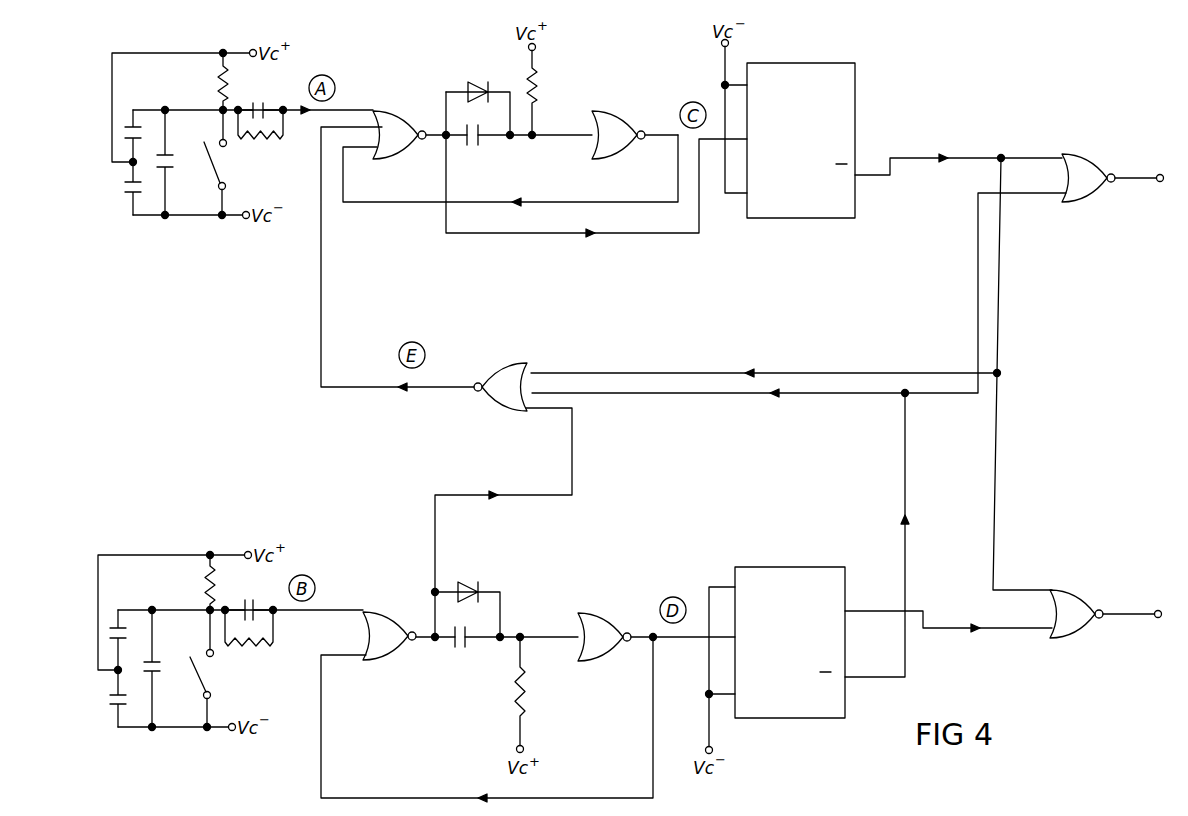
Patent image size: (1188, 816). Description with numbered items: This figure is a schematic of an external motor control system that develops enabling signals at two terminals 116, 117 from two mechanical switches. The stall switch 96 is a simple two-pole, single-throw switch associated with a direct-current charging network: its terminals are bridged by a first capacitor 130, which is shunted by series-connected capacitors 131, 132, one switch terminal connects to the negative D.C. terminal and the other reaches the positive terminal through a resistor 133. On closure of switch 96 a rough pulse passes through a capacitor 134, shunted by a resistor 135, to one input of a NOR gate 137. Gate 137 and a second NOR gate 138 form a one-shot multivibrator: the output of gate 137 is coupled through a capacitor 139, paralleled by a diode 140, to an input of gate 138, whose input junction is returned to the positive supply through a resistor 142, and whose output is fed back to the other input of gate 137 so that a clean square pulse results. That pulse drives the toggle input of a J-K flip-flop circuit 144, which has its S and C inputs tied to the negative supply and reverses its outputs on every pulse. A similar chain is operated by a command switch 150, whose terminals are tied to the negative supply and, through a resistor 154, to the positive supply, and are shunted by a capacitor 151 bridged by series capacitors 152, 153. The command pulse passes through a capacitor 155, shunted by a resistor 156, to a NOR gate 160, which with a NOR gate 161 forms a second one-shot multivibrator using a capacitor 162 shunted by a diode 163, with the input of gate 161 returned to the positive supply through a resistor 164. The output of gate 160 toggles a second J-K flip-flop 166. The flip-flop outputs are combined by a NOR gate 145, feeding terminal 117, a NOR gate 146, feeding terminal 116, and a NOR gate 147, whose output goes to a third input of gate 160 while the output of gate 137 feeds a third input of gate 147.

The stall switch 96 is at (201, 672).
The terminal 116 is at (1168, 172).
The terminal 117 is at (1156, 618).
The first capacitor 130 is at (156, 660).
The capacitor 131 is at (118, 624).
The capacitor 132 is at (112, 700).
The resistor 133 is at (207, 575).
The capacitor 134 is at (244, 604).
The resistor 135 is at (258, 648).
The NOR gate 137 is at (388, 612).
The second NOR gate 138 is at (606, 614).
The capacitor 139 is at (470, 648).
The diode 140 is at (483, 590).
The resistor 142 is at (527, 692).
The J-K flip-flop circuit 144 is at (796, 567).
The NOR gate 145 is at (1086, 594).
The NOR gate 146 is at (1098, 164).
The NOR gate 147 is at (514, 362).
The command switch 150 is at (212, 168).
The capacitor 151 is at (168, 156).
The capacitor 152 is at (133, 122).
The capacitor 153 is at (126, 194).
The resistor 154 is at (215, 75).
The capacitor 155 is at (262, 104).
The resistor 156 is at (258, 142).
The NOR gate 160 is at (412, 113).
The NOR gate 161 is at (630, 121).
The capacitor 162 is at (478, 146).
The diode 163 is at (478, 82).
The resistor 164 is at (538, 100).
The second J-K flip-flop 166 is at (845, 57).